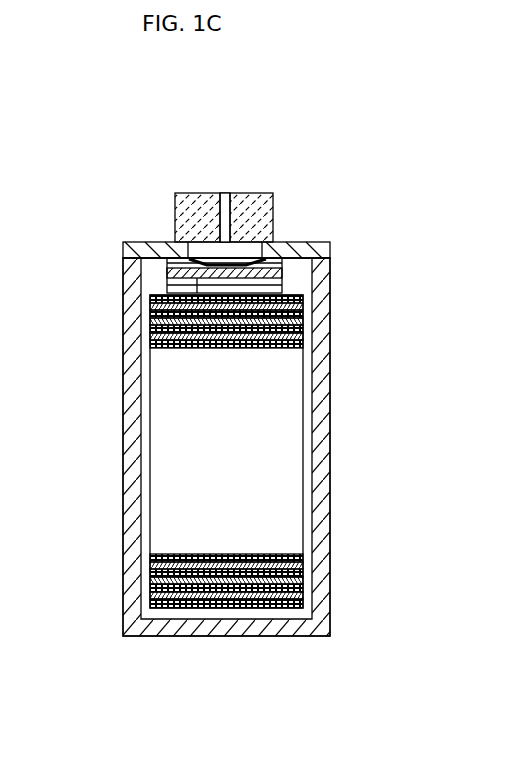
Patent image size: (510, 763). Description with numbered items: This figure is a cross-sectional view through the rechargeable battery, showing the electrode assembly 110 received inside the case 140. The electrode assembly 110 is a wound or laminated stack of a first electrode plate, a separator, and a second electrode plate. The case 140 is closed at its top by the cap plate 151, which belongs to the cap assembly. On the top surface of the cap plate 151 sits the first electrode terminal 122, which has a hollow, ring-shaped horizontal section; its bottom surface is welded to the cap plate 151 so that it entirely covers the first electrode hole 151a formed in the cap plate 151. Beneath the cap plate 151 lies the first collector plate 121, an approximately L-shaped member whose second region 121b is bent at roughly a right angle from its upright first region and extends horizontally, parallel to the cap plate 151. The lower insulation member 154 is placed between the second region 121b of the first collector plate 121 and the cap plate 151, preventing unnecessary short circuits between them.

The electrode assembly 110 is at (311, 413).
The case 140 is at (330, 533).
The first collector plate 121 is at (167, 272).
The second region 121b is at (197, 285).
The first electrode terminal 122 is at (255, 208).
The cap plate 151 is at (298, 249).
The first electrode hole 151a is at (191, 256).
The lower insulation member 154 is at (282, 286).